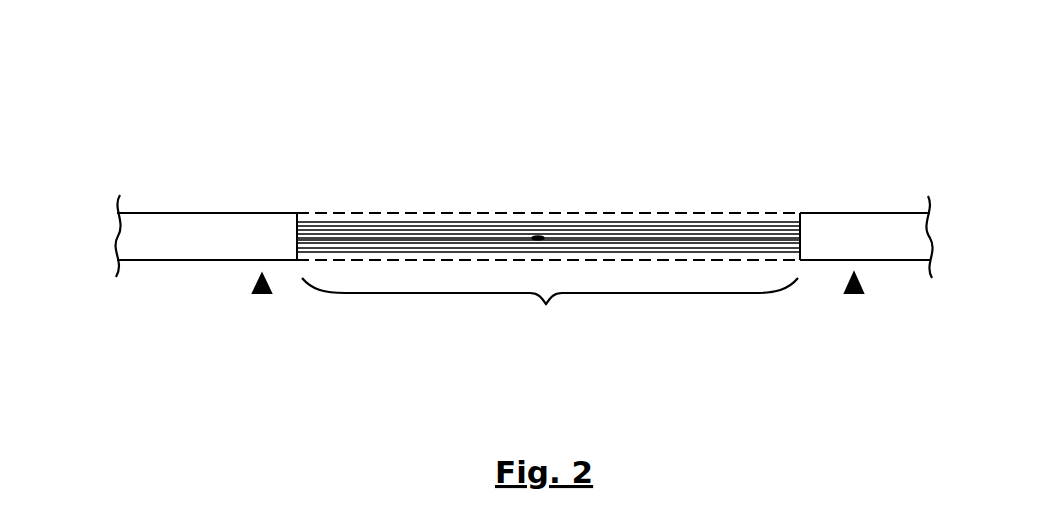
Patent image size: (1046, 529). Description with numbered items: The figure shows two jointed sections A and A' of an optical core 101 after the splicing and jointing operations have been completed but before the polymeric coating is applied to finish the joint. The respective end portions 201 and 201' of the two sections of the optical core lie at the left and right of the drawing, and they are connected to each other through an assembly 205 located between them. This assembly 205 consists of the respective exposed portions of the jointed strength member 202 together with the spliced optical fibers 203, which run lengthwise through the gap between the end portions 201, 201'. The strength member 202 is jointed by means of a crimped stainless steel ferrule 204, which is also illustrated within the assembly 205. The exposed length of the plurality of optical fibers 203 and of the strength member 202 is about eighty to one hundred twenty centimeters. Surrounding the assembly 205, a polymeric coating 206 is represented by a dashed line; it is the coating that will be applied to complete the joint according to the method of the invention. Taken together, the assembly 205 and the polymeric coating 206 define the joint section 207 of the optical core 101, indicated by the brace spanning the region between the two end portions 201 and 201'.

The optical core 101 is at (173, 155).
The end portion 201 is at (253, 186).
The end portion 201' is at (853, 192).
The strength member 202 is at (692, 237).
The spliced optical fibers 203 is at (448, 226).
The crimped stainless steel ferrule 204 is at (536, 236).
The assembly 205 is at (561, 200).
The polymeric coating 206 is at (396, 212).
The joint section 207 is at (550, 312).
The jointed section A is at (294, 323).
The jointed section A' is at (844, 331).